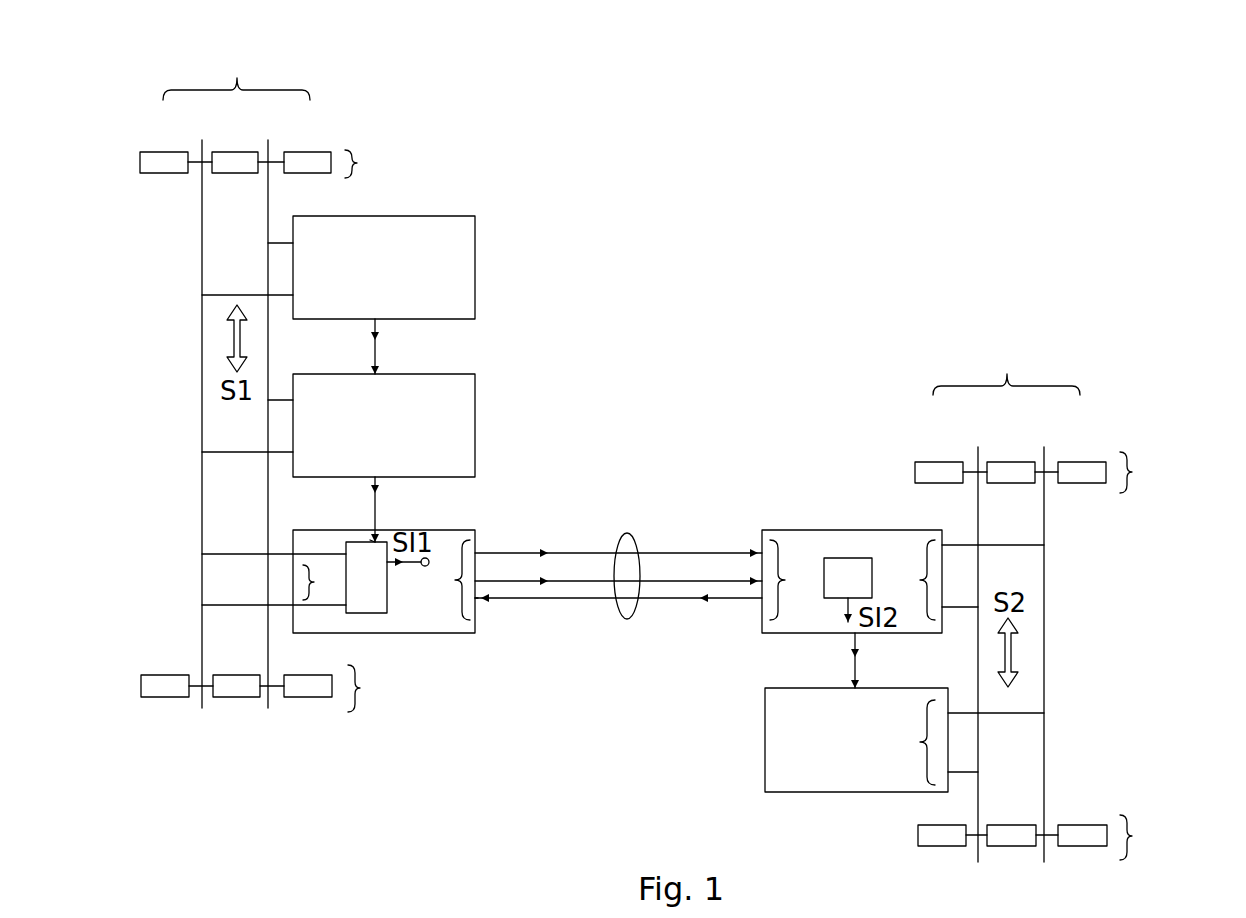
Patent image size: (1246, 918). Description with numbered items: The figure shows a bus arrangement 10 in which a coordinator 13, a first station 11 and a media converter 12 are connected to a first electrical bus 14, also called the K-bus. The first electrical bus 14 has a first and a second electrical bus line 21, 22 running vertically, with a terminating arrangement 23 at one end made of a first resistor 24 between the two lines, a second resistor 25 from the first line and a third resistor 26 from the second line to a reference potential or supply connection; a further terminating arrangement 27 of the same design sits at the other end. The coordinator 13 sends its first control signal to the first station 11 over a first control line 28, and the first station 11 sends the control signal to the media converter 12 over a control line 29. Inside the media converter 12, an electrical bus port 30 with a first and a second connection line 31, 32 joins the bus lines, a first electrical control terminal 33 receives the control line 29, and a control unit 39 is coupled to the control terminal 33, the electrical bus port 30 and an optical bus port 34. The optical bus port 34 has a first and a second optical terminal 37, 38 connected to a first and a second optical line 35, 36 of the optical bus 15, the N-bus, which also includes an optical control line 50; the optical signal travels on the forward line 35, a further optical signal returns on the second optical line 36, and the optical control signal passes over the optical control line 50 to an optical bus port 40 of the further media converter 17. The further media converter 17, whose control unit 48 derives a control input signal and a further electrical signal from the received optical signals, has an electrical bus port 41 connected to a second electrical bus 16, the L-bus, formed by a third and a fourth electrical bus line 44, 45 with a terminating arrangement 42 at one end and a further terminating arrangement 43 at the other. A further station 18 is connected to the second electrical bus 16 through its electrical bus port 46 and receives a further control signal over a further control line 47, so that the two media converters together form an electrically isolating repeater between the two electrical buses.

The bus arrangement 10 is at (990, 131).
The first station 11 is at (477, 412).
The media converter 12 is at (477, 538).
The coordinator 13 is at (477, 262).
The first electrical bus 14 is at (236, 67).
The optical bus 15 is at (618, 582).
The second electrical bus 16 is at (1006, 370).
The further media converter 17 is at (762, 532).
The further station 18 is at (763, 770).
The first electrical bus line 21 is at (202, 150).
The second electrical bus line 22 is at (268, 150).
The terminating arrangement 23 is at (368, 165).
The first resistor 24 is at (234, 175).
The second resistor 25 is at (165, 175).
The third resistor 26 is at (308, 175).
The further terminating arrangement 27 is at (267, 688).
The first control line 28 is at (378, 342).
The control line 29 is at (378, 488).
The electrical bus port 30 is at (324, 582).
The first connection line 31 is at (283, 608).
The second connection line 32 is at (285, 552).
The first electrical control terminal 33 is at (370, 540).
The optical bus port 34 is at (446, 580).
The first optical line 35 is at (578, 580).
The second optical line 36 is at (575, 600).
The first optical terminal 37 is at (480, 585).
The second optical terminal 38 is at (478, 600).
The control unit 39 is at (390, 598).
The optical bus port 40 is at (794, 580).
The electrical bus port 41 is at (914, 580).
The terminating arrangement 42 is at (1041, 472).
The further terminating arrangement 43 is at (1043, 837).
The third electrical bus line 44 is at (978, 456).
The fourth electrical bus line 45 is at (1044, 456).
The electrical bus port 46 is at (911, 742).
The further control line 47 is at (858, 645).
The control unit 48 is at (852, 558).
The optical control line 50 is at (650, 553).